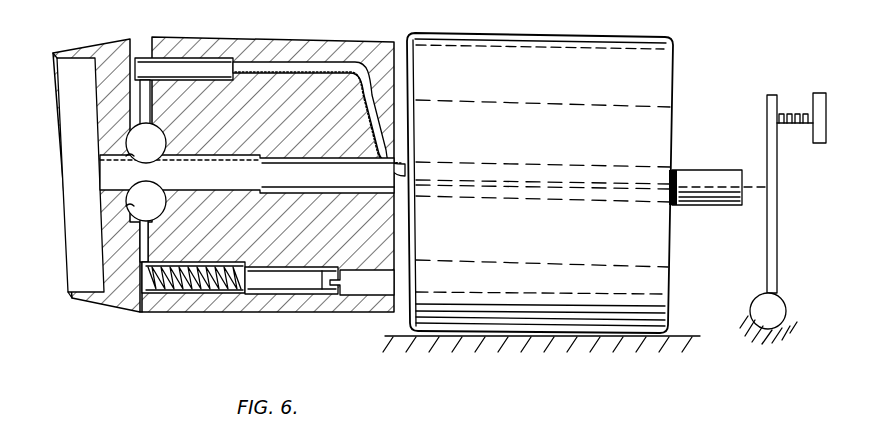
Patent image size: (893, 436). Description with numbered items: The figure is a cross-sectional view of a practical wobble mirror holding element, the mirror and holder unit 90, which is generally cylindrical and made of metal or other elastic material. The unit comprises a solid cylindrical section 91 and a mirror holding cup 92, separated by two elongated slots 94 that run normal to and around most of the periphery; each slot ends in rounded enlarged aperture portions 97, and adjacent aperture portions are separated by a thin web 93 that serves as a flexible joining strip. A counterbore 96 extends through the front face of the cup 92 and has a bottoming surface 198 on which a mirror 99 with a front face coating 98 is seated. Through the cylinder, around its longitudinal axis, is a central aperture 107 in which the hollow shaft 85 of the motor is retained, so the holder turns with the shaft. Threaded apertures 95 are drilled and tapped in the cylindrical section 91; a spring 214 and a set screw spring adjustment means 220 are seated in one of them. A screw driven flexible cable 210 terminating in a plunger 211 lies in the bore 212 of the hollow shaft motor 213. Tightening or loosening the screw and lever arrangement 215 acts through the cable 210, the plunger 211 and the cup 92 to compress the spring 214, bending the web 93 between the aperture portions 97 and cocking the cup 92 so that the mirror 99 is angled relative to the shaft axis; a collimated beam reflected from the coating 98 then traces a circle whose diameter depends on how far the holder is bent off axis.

The hollow shaft 85 is at (716, 208).
The mirror and holder unit 90 is at (228, 313).
The solid cylindrical section 91 is at (343, 252).
The cup 92 is at (118, 290).
The thin web 93 is at (180, 96).
The elongated slots 94 is at (141, 106).
The threaded apertures 95 is at (276, 62).
The counterbore 96 is at (58, 74).
The enlarged aperture portions 97 is at (128, 155).
The front face coating 98 is at (60, 163).
The mirror 99 is at (78, 272).
The stem 107 is at (230, 188).
The bottoming surface 198 is at (97, 64).
The flexible cable 210 is at (396, 44).
The plunger 211 is at (148, 70).
The bore 212 is at (678, 192).
The hollow shaft motor 213 is at (535, 303).
The spring 214 is at (183, 292).
The screw and lever arrangement 215 is at (778, 113).
The set screw spring adjustment means 220 is at (322, 292).